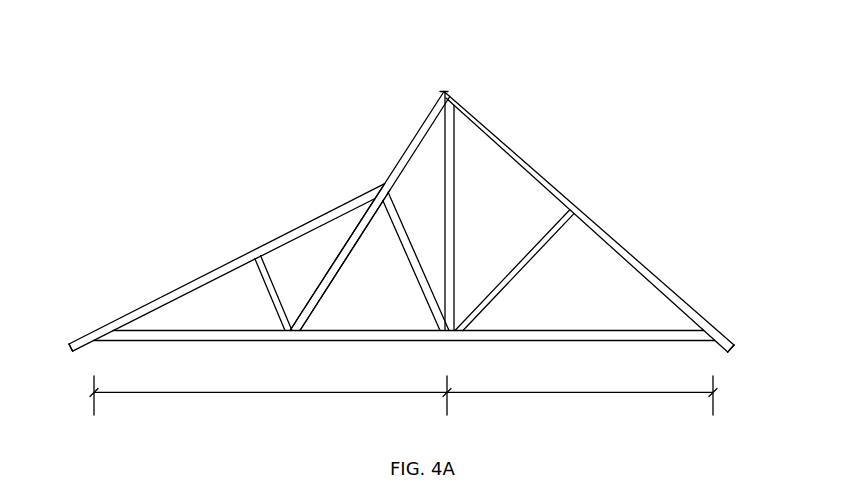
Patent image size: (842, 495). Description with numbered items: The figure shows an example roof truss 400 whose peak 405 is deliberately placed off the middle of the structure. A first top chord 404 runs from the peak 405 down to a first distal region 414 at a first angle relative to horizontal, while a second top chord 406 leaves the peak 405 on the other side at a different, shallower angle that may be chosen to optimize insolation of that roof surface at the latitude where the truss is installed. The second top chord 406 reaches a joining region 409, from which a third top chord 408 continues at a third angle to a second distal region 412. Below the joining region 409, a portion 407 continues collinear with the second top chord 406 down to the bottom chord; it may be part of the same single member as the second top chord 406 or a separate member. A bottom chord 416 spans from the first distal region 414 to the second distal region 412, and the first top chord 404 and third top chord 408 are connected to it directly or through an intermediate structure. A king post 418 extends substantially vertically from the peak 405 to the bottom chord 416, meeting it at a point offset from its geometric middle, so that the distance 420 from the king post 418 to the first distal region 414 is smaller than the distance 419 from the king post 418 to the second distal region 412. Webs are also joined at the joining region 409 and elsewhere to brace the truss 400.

The truss 400 is at (221, 62).
The first top chord 404 is at (525, 160).
The peak 405 is at (445, 92).
The second top chord 406 is at (408, 143).
The portion 407 is at (340, 268).
The third top chord 408 is at (190, 281).
The joining region 409 is at (366, 173).
The second distal region 412 is at (70, 316).
The first distal region 414 is at (736, 321).
The bottom chord 416 is at (633, 341).
The king post 418 is at (455, 203).
The distance 419 is at (270, 397).
The distance 420 is at (582, 397).